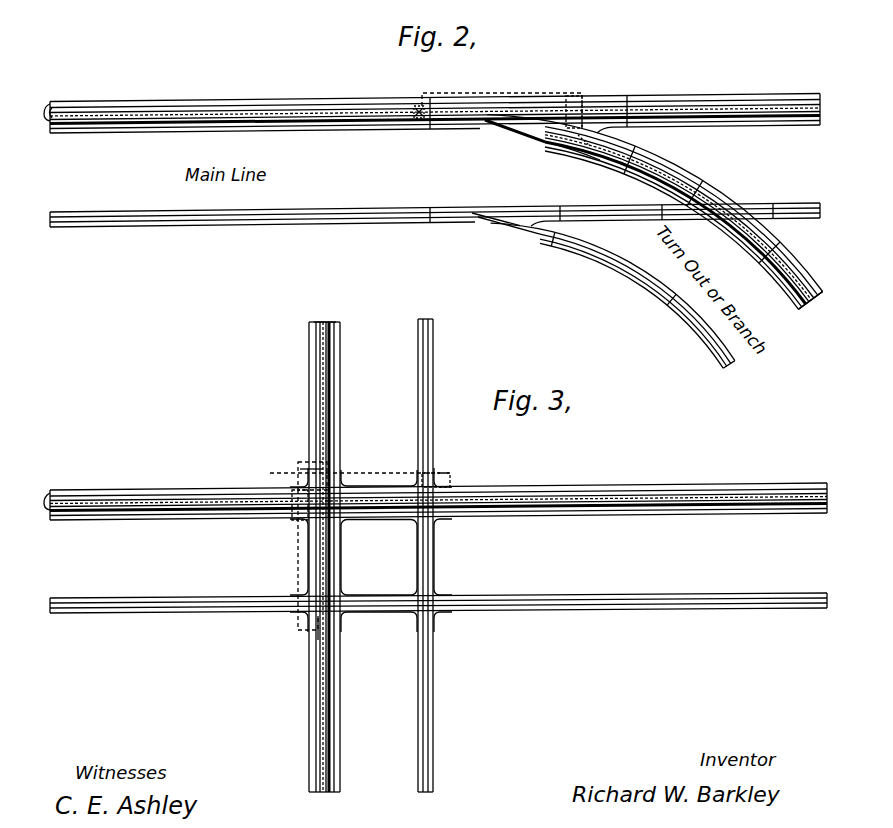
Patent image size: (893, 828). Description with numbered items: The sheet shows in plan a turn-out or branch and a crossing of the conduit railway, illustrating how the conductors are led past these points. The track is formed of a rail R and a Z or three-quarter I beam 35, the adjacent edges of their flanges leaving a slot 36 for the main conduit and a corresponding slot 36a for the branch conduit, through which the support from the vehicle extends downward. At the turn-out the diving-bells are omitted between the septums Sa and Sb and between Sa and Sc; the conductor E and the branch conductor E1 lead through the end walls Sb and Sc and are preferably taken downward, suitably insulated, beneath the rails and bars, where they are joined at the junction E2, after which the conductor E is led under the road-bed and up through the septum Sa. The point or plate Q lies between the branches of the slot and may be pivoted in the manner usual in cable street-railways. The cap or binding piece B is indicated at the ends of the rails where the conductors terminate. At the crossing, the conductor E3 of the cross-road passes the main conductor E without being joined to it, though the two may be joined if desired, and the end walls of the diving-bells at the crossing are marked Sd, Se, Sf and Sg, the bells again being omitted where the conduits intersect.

In FIG. 2, the rail R is at (153, 104).
In FIG. 3, the rail R is at (98, 490).
In FIG. 2, the beam 35 is at (102, 133).
In FIG. 3, the beam 35 is at (158, 516).
In FIG. 2, the slot 36 is at (50, 128).
In FIG. 3, the slot 36 is at (52, 517).
In FIG. 2, the slot of branch conduit 36a is at (810, 304).
In FIG. 2, the terminal binding cap B is at (47, 116).
In FIG. 3, the terminal binding cap B is at (48, 506).
In FIG. 2, the conductor E is at (52, 112).
In FIG. 3, the conductor E is at (52, 503).
In FIG. 2, the conductor E1 is at (797, 305).
In FIG. 2, the junction E2 is at (564, 92).
In FIG. 3, the conductor of the cross-road E3 is at (320, 322).
In FIG. 2, the point or plate Q is at (537, 126).
In FIG. 2, the septum Sa is at (418, 106).
In FIG. 2, the end wall Sb is at (574, 96).
In FIG. 2, the end wall Sc is at (581, 140).
In FIG. 3, the end wall Sd is at (284, 512).
In FIG. 3, the end wall Se is at (325, 466).
In FIG. 3, the end wall Sf is at (334, 636).
In FIG. 3, the end wall Sg is at (441, 489).